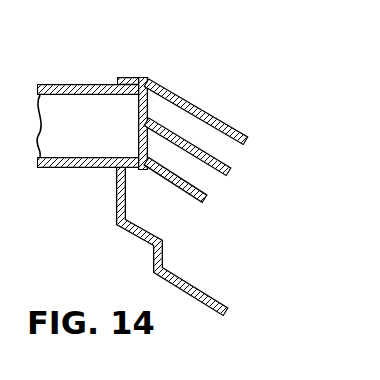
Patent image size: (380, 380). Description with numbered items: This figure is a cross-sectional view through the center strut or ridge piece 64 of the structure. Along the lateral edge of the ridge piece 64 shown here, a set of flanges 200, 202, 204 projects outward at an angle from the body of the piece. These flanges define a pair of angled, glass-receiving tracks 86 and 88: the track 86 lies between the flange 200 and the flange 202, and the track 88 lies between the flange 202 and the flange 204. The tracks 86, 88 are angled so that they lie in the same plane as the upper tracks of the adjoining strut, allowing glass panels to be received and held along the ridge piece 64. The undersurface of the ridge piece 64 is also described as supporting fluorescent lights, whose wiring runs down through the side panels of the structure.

The center strut or ridge piece 64 is at (72, 85).
The glass-receiving track 86 is at (212, 137).
The glass-receiving track 88 is at (208, 187).
The flange 200 is at (180, 93).
The flange 202 is at (221, 170).
The flange 204 is at (198, 207).